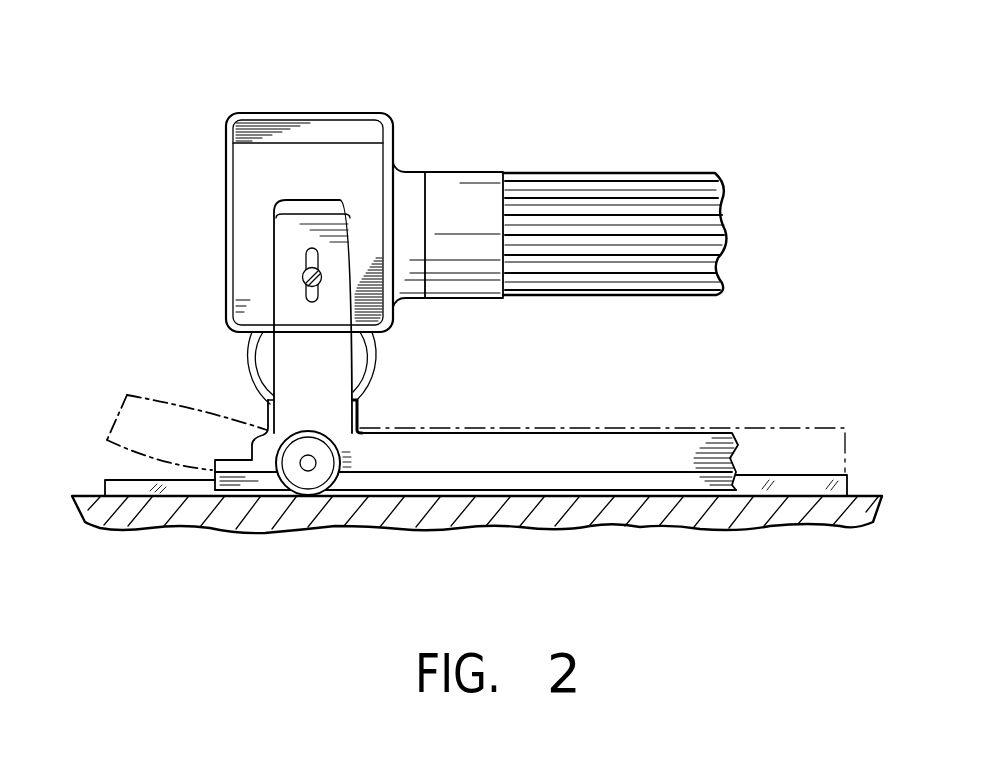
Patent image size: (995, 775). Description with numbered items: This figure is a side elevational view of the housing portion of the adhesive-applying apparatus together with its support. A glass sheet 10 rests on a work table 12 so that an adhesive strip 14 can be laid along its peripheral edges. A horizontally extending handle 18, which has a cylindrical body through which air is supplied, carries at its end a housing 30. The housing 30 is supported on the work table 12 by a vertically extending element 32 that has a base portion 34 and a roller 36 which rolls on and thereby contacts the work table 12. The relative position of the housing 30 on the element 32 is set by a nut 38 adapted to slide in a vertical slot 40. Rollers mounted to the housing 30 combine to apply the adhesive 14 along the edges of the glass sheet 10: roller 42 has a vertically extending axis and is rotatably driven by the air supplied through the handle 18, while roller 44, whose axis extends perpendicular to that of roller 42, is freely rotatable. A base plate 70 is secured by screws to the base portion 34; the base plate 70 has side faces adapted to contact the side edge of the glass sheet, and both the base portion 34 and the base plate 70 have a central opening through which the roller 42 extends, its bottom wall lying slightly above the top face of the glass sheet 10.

The glass sheet 10 is at (768, 470).
The work table 12 is at (866, 492).
The adhesive strip 14 is at (172, 409).
The handle 18 is at (609, 193).
The housing 30 is at (296, 113).
The vertically extending element 32 is at (322, 372).
The base portion 34 is at (465, 458).
The roller 36 is at (300, 476).
The nut 38 is at (305, 270).
The vertical slot 40 is at (310, 291).
The roller 42 is at (266, 415).
The roller 44 is at (372, 352).
The base plate 70 is at (558, 482).